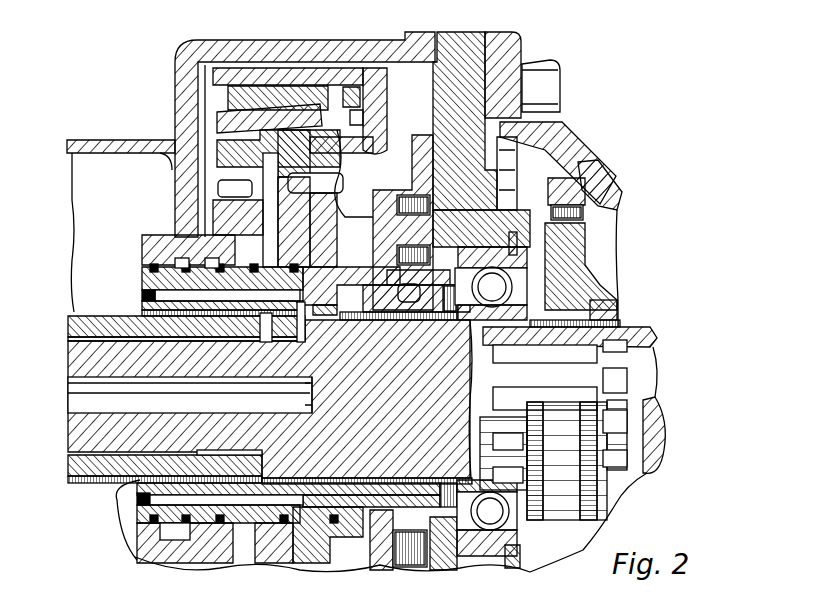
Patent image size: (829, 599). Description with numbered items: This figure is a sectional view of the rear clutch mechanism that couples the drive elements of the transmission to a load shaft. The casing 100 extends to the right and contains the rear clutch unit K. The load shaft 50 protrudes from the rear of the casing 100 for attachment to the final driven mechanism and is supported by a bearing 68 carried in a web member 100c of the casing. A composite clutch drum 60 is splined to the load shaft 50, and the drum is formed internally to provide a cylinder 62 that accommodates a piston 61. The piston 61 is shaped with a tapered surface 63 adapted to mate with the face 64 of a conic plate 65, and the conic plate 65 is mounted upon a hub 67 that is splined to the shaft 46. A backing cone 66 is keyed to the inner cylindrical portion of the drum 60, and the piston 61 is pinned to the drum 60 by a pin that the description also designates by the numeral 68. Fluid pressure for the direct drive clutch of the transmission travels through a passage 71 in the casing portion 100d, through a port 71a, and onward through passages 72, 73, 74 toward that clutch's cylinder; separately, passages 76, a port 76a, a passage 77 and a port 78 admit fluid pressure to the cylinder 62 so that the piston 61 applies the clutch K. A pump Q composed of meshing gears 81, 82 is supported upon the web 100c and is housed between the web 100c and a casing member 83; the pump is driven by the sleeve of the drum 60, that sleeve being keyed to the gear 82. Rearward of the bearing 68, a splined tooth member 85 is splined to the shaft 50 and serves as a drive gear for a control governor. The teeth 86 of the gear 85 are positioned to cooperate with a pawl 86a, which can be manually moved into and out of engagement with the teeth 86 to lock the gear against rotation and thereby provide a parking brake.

The casing 100 is at (80, 140).
The web member 100c is at (558, 130).
The casing 100d is at (187, 207).
The composite clutch drum 60 is at (378, 80).
The backing cone 66 is at (252, 84).
The rear clutch unit K is at (302, 68).
The piston 61 is at (358, 94).
The cylinder 62 is at (363, 116).
The casing member 83 is at (397, 162).
The face 64 is at (218, 124).
The tapered surface 63 is at (226, 140).
The conic plate 65 is at (234, 166).
The hub 67 is at (236, 205).
The passage 71 is at (162, 258).
The port 71a is at (166, 280).
The passage 72 is at (172, 295).
The bearing 68 is at (333, 250).
The gear 81 is at (511, 232).
The teeth 86 is at (585, 224).
The pawl 86a is at (590, 166).
The splined tooth member 85 is at (570, 262).
The load shaft 50 is at (90, 355).
The shaft 46 is at (70, 324).
The passage 74 is at (92, 385).
The passage 73 is at (303, 392).
The passage 77 is at (152, 500).
The passages 76 is at (162, 532).
The port 76a is at (200, 540).
The port 78 is at (372, 552).
The gear 82 is at (414, 566).
The pump Q is at (428, 565).